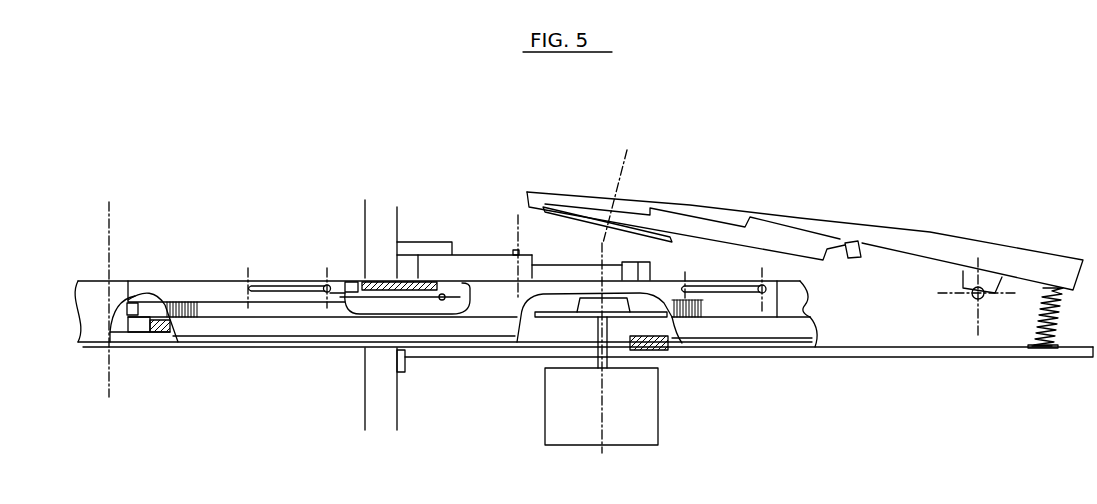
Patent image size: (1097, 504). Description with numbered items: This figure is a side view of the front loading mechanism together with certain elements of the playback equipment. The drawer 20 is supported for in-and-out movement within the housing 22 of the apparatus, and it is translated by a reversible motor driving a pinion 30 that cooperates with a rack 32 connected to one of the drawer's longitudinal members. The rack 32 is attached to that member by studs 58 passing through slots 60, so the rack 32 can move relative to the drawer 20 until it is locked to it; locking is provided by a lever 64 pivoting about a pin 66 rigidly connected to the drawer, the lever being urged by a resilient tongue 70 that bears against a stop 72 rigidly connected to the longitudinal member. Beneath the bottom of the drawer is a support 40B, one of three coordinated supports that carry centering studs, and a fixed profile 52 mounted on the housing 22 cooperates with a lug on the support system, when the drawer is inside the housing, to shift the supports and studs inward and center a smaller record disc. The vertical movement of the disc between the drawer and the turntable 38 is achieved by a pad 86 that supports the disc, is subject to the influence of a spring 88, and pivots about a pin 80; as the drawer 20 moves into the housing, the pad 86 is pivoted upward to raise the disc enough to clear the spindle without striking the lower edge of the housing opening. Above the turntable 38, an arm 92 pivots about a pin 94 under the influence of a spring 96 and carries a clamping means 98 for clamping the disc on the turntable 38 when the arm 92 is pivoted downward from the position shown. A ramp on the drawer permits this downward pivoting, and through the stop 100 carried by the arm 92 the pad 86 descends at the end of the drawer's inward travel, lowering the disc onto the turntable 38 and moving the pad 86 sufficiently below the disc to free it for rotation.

The drawer 20 is at (93, 330).
The housing 22 is at (430, 353).
The pinion 30 is at (803, 328).
The rack 32 is at (725, 307).
The turntable 38 is at (553, 315).
The support 40B is at (408, 247).
The fixed profile 52 is at (667, 350).
The studs 58 is at (327, 285).
The slots 60 is at (280, 283).
The lever 64 is at (473, 265).
The pin 66 is at (517, 252).
The resilient tongue 70 is at (558, 272).
The stop 72 is at (630, 268).
The pin 80 is at (447, 305).
The pad 86 is at (142, 323).
The spring 88 is at (412, 298).
The arm 92 is at (900, 242).
The pin 94 is at (974, 297).
The spring 96 is at (1048, 353).
The clamping means 98 is at (566, 218).
The stop 100 is at (852, 250).